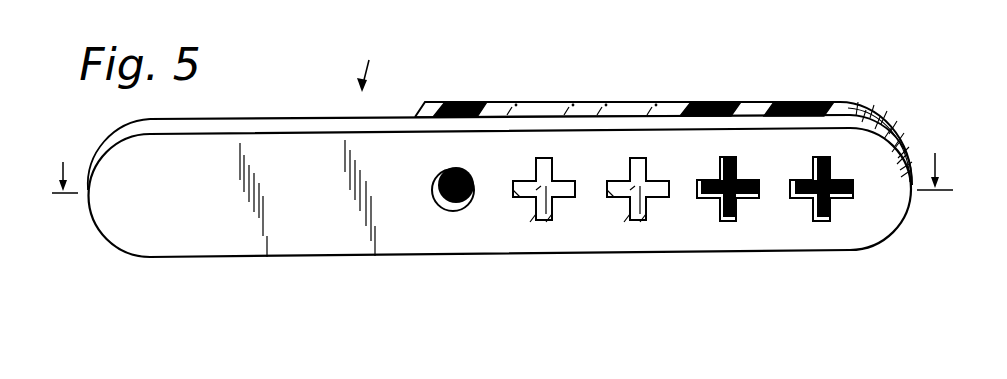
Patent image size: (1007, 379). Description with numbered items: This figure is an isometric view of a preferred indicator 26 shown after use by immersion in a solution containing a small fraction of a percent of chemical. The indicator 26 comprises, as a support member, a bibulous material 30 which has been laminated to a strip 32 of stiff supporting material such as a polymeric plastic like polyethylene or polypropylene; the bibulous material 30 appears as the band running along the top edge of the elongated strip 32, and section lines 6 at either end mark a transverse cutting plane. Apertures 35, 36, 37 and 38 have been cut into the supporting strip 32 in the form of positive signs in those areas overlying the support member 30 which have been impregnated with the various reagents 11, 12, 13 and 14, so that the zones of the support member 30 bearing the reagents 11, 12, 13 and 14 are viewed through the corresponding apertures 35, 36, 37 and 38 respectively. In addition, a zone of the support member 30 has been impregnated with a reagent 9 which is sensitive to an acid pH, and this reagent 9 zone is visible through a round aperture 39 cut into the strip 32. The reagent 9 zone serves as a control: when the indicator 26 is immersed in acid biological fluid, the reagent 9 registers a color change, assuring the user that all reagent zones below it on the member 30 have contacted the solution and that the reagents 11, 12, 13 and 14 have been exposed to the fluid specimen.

The section line 6 is at (502, 190).
The reagent 9 is at (472, 102).
The reagent 11 is at (817, 102).
The reagent 12 is at (725, 102).
The reagent 13 is at (633, 103).
The reagent 14 is at (552, 103).
The indicator 26 is at (376, 62).
The bibulous material 30 is at (441, 107).
The strip 32 is at (215, 127).
The aperture 35 is at (814, 214).
The aperture 36 is at (727, 218).
The aperture 37 is at (636, 218).
The aperture 38 is at (545, 218).
The aperture 39 is at (442, 208).